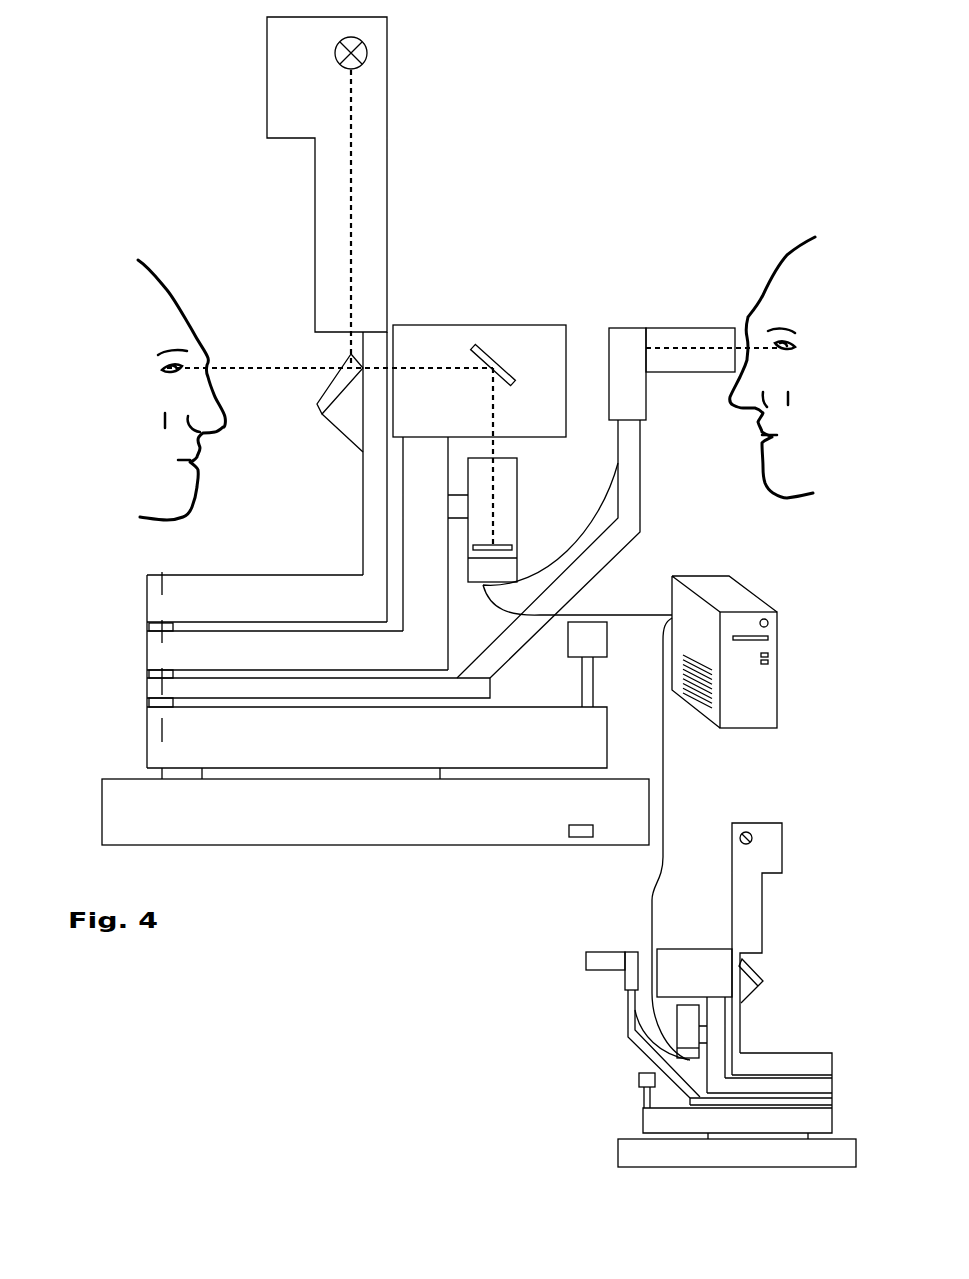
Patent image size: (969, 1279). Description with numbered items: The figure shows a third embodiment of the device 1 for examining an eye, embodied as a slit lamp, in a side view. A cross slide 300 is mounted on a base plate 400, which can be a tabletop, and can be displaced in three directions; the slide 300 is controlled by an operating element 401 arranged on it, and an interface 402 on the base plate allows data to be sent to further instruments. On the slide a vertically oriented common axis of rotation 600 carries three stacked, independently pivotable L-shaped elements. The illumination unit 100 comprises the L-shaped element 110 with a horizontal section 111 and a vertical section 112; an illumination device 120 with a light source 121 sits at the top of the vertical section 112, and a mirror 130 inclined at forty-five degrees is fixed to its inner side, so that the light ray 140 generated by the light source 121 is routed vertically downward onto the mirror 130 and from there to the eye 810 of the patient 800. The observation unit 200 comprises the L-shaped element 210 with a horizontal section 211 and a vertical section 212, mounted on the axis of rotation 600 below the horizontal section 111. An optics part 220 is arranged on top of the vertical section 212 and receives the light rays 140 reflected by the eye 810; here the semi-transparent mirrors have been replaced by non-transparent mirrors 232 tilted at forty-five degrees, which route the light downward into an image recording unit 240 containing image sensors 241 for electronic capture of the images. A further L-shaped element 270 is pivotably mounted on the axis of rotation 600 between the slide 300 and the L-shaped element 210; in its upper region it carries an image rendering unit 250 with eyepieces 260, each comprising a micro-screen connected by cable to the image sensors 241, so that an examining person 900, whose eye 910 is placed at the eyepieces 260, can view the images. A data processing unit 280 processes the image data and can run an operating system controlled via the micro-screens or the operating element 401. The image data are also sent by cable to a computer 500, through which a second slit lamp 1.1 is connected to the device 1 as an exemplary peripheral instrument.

The device 1 is at (602, 83).
The slit lamp 1.1 is at (805, 790).
The illumination unit 100 is at (215, 93).
The L-shaped element 110 is at (340, 530).
The horizontal section 111 is at (147, 590).
The vertical section 112 is at (370, 480).
The illumination device 120 is at (248, 48).
The light source 121 is at (367, 53).
The mirror 130 is at (318, 403).
The light ray 140 is at (348, 243).
The observation unit 200 is at (690, 255).
The L-shaped element 210 is at (128, 647).
The horizontal section 211 is at (148, 647).
The vertical section 212 is at (450, 580).
The optics part 220 is at (468, 327).
The mirror 232 is at (495, 360).
The image recording unit 240 is at (518, 497).
The image sensor 241 is at (518, 545).
The image rendering unit 250 is at (627, 310).
The eyepiece 260 is at (703, 330).
The L-shaped element 270 is at (137, 689).
The data processing unit 280 is at (500, 570).
The cross slide 300 is at (150, 747).
The base plate 400 is at (113, 817).
The operating element 401 is at (582, 680).
The interface 402 is at (577, 838).
The computer 500 is at (772, 627).
The axis of rotation 600 is at (162, 572).
The patient 800 is at (150, 248).
The eye 810 is at (165, 369).
The examining person 900 is at (798, 228).
The eye of examiner 910 is at (790, 352).